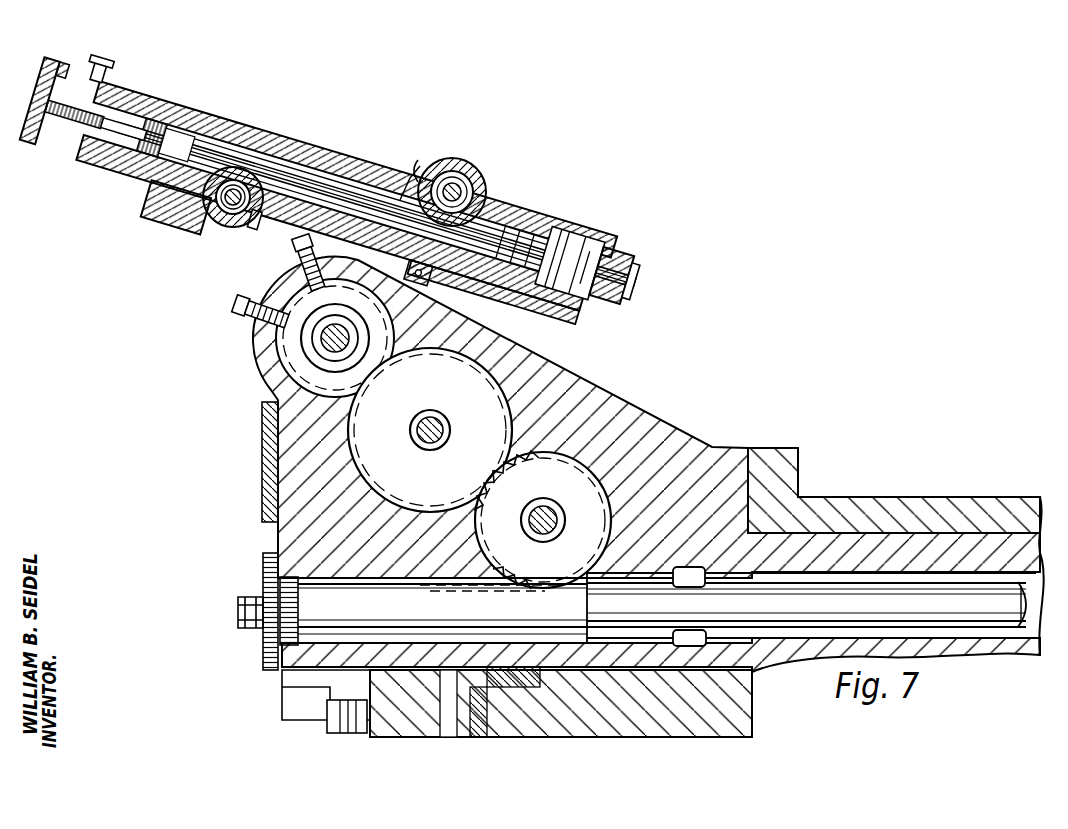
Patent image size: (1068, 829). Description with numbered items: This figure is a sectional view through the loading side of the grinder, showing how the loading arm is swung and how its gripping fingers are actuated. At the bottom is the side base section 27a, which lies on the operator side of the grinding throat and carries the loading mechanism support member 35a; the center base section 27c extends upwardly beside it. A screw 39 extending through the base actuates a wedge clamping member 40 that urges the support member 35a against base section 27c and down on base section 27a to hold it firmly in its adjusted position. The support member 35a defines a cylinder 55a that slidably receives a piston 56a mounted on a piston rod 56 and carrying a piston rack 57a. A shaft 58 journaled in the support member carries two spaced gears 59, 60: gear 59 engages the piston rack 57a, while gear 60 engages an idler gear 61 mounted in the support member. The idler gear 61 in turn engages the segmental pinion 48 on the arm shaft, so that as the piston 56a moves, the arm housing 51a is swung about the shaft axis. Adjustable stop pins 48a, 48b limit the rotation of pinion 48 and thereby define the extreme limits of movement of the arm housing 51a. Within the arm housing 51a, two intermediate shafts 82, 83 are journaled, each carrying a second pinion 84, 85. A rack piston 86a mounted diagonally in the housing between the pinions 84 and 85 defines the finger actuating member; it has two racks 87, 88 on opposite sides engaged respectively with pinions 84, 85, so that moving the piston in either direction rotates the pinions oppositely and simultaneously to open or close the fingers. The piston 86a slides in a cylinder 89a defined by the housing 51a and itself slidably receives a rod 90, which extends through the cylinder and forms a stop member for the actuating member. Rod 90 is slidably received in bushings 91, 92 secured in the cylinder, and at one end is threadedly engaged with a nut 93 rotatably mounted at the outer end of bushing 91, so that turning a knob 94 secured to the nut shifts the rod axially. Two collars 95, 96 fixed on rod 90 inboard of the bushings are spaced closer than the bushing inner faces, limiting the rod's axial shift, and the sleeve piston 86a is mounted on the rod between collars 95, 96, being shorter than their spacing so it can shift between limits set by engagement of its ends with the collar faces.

The side base section 27a is at (700, 736).
The center base section 27c is at (940, 500).
The loading mechanism support member 35a is at (654, 426).
The screw 39 is at (448, 737).
The wedge clamping member 40 is at (478, 737).
The segmental pinion 48 is at (268, 374).
The adjustable stop pin 48a is at (236, 306).
The adjustable stop pin 48b is at (300, 254).
The arm housing 51a is at (156, 203).
The cylinder 55a is at (292, 580).
The piston rod 56 is at (982, 632).
The piston 56a is at (658, 606).
The piston rack 57a is at (470, 590).
The shaft 58 is at (542, 520).
The gear 59 is at (560, 548).
The gear 60 is at (520, 470).
The idler gear 61 is at (414, 473).
The intermediate shaft 82 is at (239, 221).
The intermediate shaft 83 is at (458, 183).
The second pinion 84 is at (218, 226).
The second pinion 85 is at (482, 191).
The rack piston 86a is at (248, 135).
The rack 87 is at (270, 214).
The rack 88 is at (414, 170).
The cylinder 89a is at (401, 176).
The rod 90 is at (392, 215).
The bushing 91 is at (134, 96).
The bushing 92 is at (590, 246).
The nut 93 is at (88, 166).
The knob 94 is at (42, 68).
The collar 95 is at (142, 163).
The collar 96 is at (532, 238).